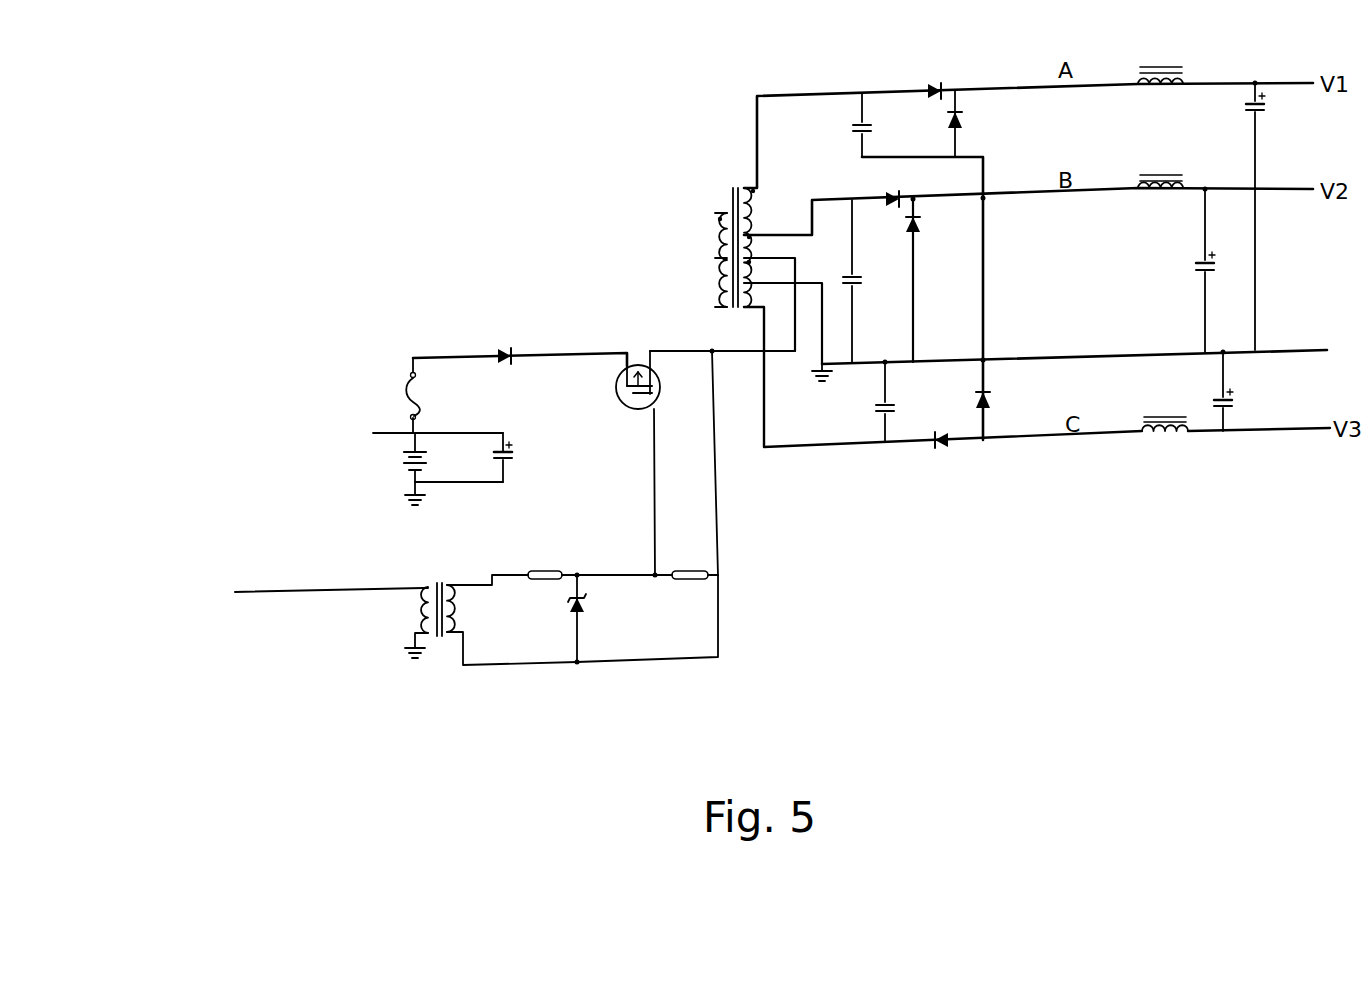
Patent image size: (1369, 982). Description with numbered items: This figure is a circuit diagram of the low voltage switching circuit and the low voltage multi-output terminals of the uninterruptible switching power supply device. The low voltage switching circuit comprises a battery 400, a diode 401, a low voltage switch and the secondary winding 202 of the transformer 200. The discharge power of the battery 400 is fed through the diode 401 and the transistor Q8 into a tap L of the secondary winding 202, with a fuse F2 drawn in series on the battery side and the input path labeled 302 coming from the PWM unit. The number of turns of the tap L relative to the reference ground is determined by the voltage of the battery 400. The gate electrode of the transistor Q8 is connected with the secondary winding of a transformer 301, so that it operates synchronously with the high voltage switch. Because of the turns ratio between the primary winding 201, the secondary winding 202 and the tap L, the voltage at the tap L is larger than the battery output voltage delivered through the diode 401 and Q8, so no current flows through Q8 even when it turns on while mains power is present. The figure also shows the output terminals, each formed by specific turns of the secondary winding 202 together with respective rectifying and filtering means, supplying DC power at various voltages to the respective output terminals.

The transformer 200 is at (737, 239).
The primary winding 201 is at (701, 260).
The secondary winding 202 is at (771, 247).
The transformer 301 is at (433, 607).
The input from PWM unit 302 is at (239, 577).
The battery 400 is at (442, 456).
The diode 401 is at (520, 344).
The transistor Q8 is at (636, 395).
The fuse F2 is at (428, 395).
The tap L is at (777, 297).